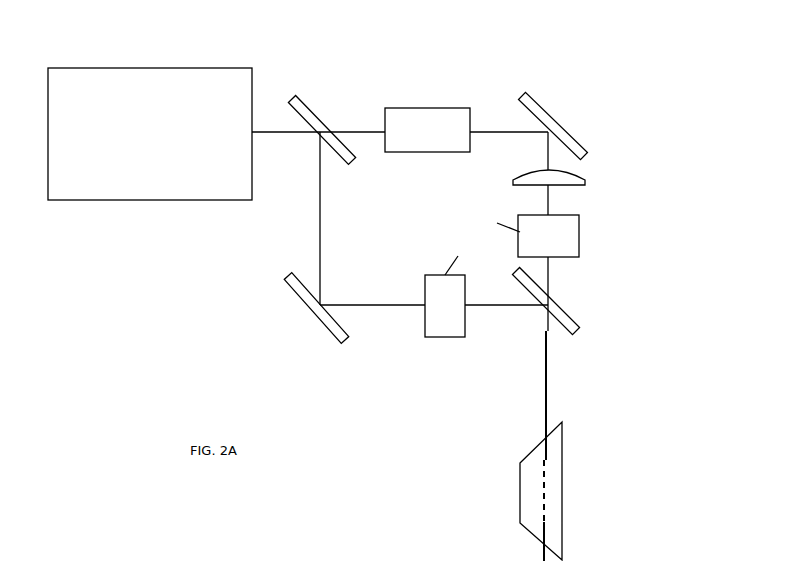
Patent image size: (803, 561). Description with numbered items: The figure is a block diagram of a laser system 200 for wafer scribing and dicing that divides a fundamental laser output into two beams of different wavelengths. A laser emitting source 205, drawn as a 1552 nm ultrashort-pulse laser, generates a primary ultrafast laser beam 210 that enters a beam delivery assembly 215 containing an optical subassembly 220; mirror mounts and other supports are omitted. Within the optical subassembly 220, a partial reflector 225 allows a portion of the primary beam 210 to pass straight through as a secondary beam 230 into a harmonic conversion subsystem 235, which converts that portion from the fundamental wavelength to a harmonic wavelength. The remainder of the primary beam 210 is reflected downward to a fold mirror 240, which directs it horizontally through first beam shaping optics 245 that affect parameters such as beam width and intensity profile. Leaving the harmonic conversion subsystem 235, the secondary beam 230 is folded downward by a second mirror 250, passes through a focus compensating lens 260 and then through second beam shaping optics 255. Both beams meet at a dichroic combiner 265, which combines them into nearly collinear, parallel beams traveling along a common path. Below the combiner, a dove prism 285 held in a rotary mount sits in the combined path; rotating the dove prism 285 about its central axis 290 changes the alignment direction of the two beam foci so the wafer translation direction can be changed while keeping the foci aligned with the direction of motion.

The laser system 200 is at (664, 48).
The laser emitting source 205 is at (150, 134).
The primary ultrafast laser beam 210 is at (272, 132).
The beam delivery assembly 215 is at (195, 342).
The optical subassembly 220 is at (676, 266).
The partial reflector 225 is at (334, 139).
The secondary beam 230 is at (494, 132).
The harmonic conversion subsystem 235 is at (427, 95).
The mirror 240 is at (283, 288).
The first beam shaping optics 245 is at (420, 263).
The mirror 250 is at (531, 96).
The second beam shaping optics 255 is at (522, 258).
The focus compensating lens 260 is at (578, 176).
The dichroic combiner 265 is at (560, 307).
The dove prism 285 is at (520, 490).
The central axis 290 is at (542, 480).